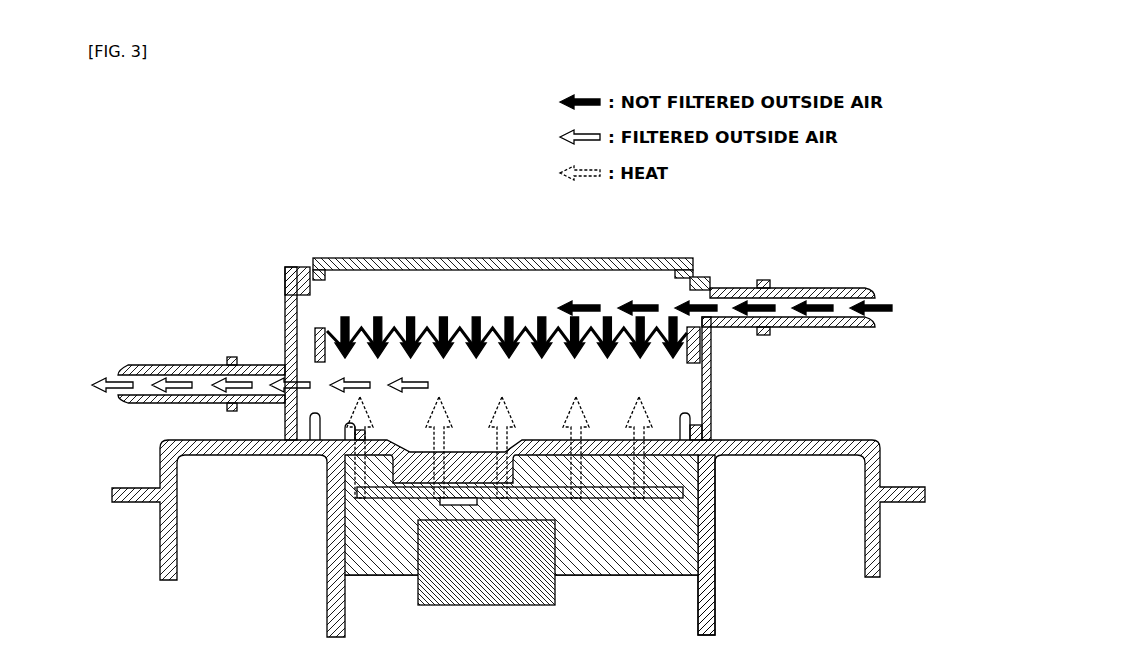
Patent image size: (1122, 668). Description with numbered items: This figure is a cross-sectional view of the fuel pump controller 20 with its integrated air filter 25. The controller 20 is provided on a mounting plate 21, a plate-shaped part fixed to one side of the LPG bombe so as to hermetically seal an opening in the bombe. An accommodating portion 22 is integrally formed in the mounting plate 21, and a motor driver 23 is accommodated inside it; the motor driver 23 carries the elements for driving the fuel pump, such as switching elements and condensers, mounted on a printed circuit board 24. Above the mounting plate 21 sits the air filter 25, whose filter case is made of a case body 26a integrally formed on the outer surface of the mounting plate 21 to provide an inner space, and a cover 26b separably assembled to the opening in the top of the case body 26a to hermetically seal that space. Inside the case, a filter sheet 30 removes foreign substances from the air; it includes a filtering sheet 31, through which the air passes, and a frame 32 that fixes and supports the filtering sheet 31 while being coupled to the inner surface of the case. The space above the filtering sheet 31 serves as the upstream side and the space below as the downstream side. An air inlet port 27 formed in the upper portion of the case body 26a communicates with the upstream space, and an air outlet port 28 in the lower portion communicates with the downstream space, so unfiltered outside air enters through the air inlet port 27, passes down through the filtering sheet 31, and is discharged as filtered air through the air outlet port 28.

The fuel pump controller 20 is at (493, 292).
The mounting plate 21 is at (792, 440).
The accommodating portion 22 is at (715, 537).
The motor driver 23 is at (591, 504).
The printed circuit board 24 is at (637, 499).
The air filter 25 is at (297, 258).
The case body 26a is at (284, 310).
The cover 26b is at (398, 258).
The air inlet port 27 is at (840, 290).
The air outlet port 28 is at (173, 365).
The filter sheet 30 is at (460, 315).
The filtering sheet 31 is at (525, 332).
The frame 32 is at (700, 345).